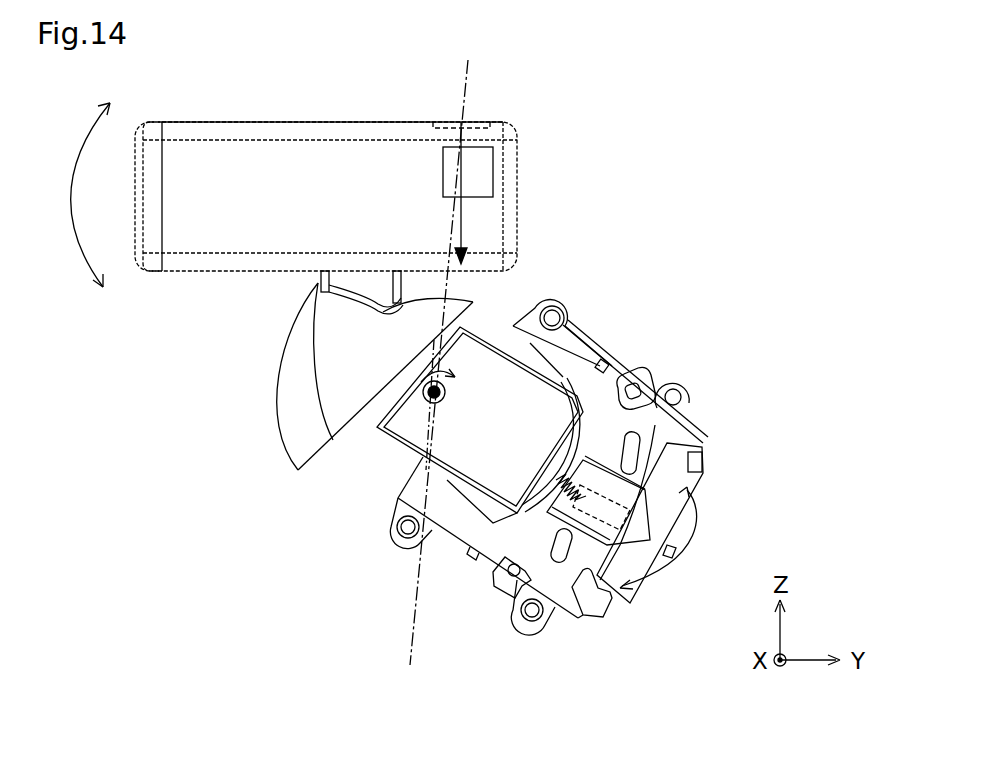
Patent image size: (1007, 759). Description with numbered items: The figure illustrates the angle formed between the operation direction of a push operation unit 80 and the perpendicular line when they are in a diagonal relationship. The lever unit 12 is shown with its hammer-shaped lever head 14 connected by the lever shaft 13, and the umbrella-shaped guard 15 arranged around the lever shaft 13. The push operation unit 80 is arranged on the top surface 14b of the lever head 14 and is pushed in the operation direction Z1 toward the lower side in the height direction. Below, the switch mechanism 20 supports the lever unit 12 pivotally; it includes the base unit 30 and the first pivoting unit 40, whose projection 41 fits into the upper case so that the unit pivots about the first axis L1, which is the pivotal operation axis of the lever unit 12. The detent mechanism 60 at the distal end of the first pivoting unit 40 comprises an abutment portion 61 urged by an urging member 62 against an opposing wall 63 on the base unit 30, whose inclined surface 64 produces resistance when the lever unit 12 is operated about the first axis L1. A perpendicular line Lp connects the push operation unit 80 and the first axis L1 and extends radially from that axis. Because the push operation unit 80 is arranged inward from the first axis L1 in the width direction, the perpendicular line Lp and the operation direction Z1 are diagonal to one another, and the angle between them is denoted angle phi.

The lever unit 12 is at (206, 281).
The lever shaft 13 is at (318, 288).
The lever head 14 is at (275, 232).
The top surface 14b is at (320, 123).
The guard 15 is at (277, 406).
The switch mechanism 20 is at (745, 288).
The base unit 30 is at (523, 340).
The first pivoting unit 40 is at (542, 425).
The projection 41 is at (410, 436).
The detent mechanism 60 is at (762, 332).
The abutment portion 61 is at (678, 455).
The urging member 62 is at (636, 380).
The opposing wall 63 is at (683, 453).
The inclined surface 64 is at (583, 617).
The push operation unit 80 is at (430, 121).
The first axis L1 is at (447, 396).
The operation direction Z1 is at (462, 216).
The perpendicular line Lp is at (470, 73).
The angle φ phi is at (457, 243).